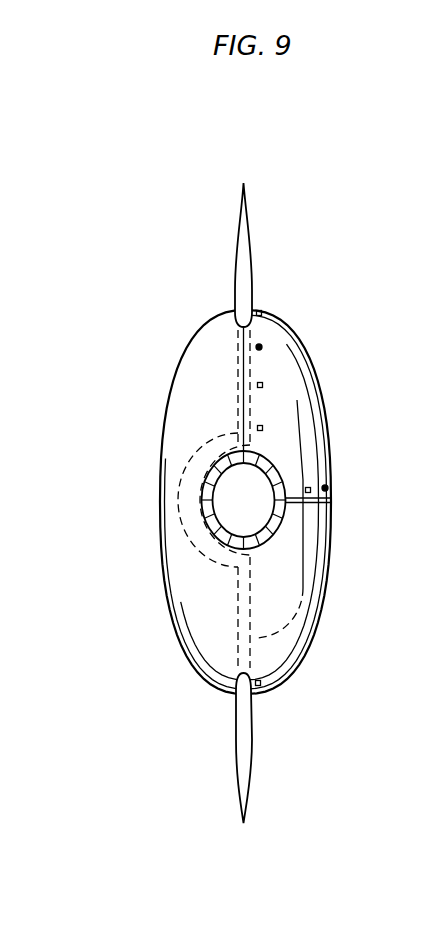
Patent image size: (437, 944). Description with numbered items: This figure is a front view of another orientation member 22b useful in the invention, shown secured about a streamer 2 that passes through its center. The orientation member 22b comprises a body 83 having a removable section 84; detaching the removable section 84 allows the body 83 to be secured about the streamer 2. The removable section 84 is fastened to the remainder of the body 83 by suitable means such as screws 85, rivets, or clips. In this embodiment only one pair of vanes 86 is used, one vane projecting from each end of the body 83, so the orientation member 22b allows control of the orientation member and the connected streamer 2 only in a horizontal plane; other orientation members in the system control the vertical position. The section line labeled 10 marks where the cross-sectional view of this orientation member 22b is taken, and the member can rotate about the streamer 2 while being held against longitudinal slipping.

The section line 10- 10 is at (244, 180).
The orientation member 22b is at (346, 266).
The removable section 84 is at (323, 410).
The body 83 is at (192, 666).
The streamer 2 is at (280, 468).
The screws 85 is at (259, 347).
The vanes 86 is at (253, 262).